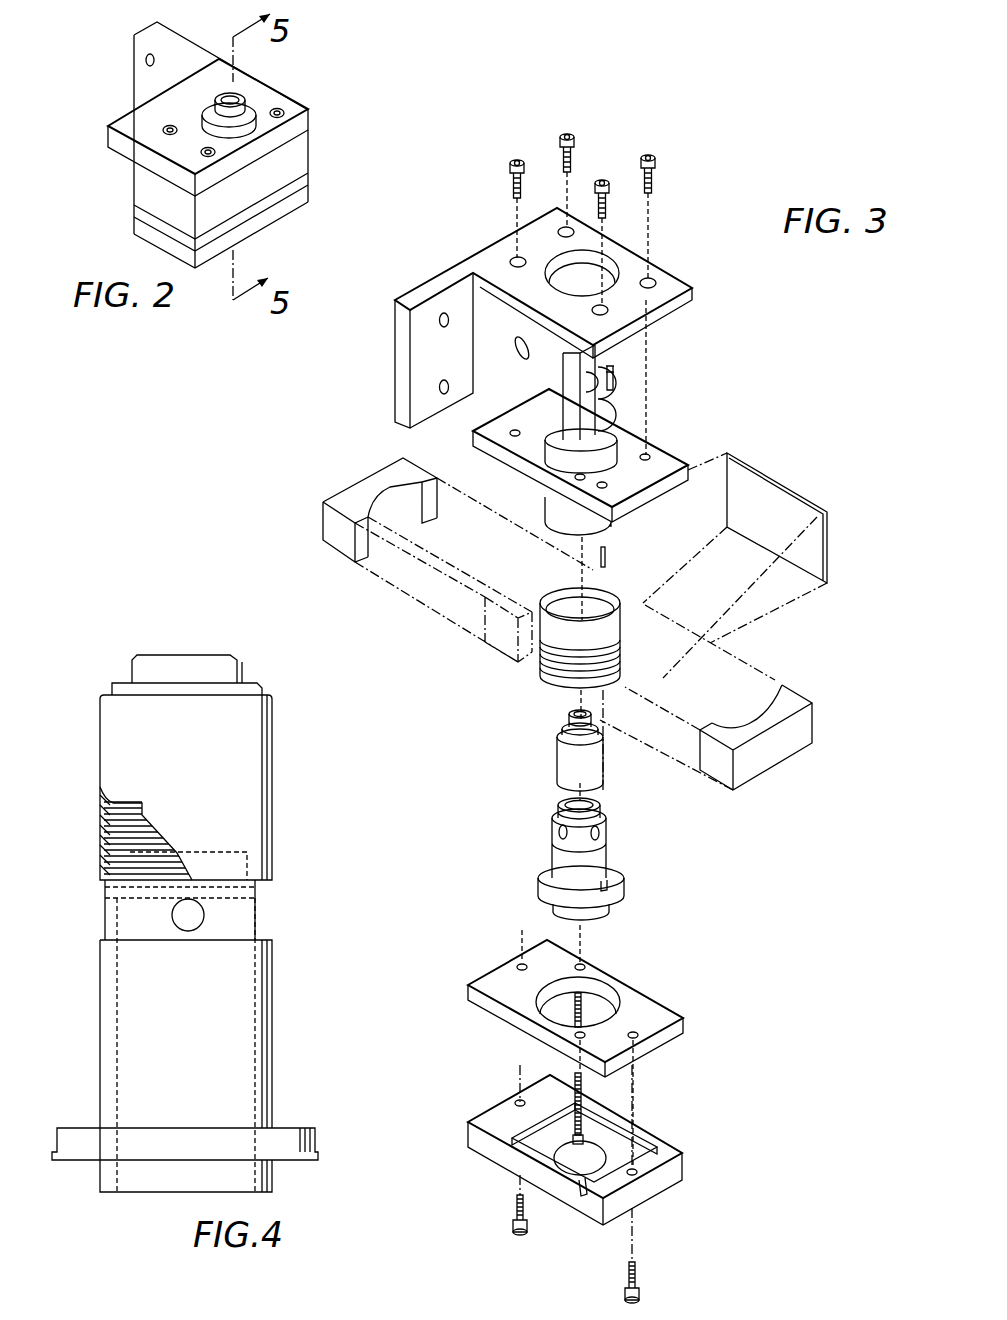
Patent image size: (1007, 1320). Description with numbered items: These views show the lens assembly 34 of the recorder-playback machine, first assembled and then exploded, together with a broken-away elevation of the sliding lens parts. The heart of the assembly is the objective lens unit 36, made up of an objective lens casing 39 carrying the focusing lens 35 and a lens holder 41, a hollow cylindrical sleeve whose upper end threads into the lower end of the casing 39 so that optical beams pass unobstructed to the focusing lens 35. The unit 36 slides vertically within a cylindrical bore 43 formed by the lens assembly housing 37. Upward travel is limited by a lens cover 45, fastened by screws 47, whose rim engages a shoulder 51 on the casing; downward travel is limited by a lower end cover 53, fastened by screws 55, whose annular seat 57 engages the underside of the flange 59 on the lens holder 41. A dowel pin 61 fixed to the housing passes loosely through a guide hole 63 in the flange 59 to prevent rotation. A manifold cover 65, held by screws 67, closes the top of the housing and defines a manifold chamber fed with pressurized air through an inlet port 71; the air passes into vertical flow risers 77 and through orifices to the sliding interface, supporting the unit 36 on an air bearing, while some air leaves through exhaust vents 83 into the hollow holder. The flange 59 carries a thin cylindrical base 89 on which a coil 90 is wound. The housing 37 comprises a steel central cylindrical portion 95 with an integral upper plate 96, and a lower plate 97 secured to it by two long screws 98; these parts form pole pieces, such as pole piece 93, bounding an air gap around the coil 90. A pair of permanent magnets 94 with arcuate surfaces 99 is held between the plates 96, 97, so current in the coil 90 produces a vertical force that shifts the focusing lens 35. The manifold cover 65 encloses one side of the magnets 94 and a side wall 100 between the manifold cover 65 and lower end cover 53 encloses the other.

In FIG. 2, the lens assembly 34 is at (313, 147).
In FIG. 2, the focusing lens 35 is at (230, 93).
In FIG. 3, the focusing lens 35 is at (566, 720).
In FIG. 2, the objective lens unit 36 is at (257, 93).
In FIG. 3, the objective lens unit 36 is at (540, 853).
In FIG. 4, the objective lens unit 36 is at (303, 925).
In FIG. 3, the lens assembly housing 37 is at (663, 432).
In FIG. 2, the objective lens casing 39 is at (229, 127).
In FIG. 3, the objective lens casing 39 is at (592, 770).
In FIG. 4, the objective lens casing 39 is at (240, 757).
In FIG. 3, the lens holder 41 is at (588, 859).
In FIG. 4, the lens holder 41 is at (242, 998).
In FIG. 3, the bore 43 is at (620, 410).
In FIG. 2, the lens cover 45 is at (214, 106).
In FIG. 3, the lens cover 45 is at (614, 372).
In FIG. 3, the screws 47 is at (590, 358).
In FIG. 4, the shoulder 51 is at (250, 682).
In FIG. 2, the lower end cover 53 is at (260, 227).
In FIG. 3, the lower end cover 53 is at (672, 1173).
In FIG. 3, the screws 55 is at (515, 1208).
In FIG. 3, the annular seat 57 is at (612, 1160).
In FIG. 3, the flange 59 is at (612, 876).
In FIG. 4, the flange 59 is at (278, 1143).
In FIG. 3, the dowel pin 61 is at (606, 557).
In FIG. 3, the guide hole 63 is at (607, 890).
In FIG. 2, the manifold cover 65 is at (145, 118).
In FIG. 3, the manifold cover 65 is at (493, 262).
In FIG. 2, the screws 67 is at (171, 135).
In FIG. 3, the screws 67 is at (649, 155).
In FIG. 3, the inlet port 71 is at (518, 358).
In FIG. 3, the flow risers 77 is at (596, 455).
In FIG. 3, the exhaust vents 83 is at (559, 832).
In FIG. 4, the exhaust vents 83 is at (192, 930).
In FIG. 3, the cylindrical base 89 is at (620, 616).
In FIG. 3, the coil 90 is at (620, 650).
In FIG. 3, the pole piece 93 is at (550, 497).
In FIG. 2, the permanent magnets 94 is at (132, 175).
In FIG. 3, the permanent magnets 94 is at (330, 530).
In FIG. 3, the central cylindrical portion 95 is at (545, 468).
In FIG. 3, the upper plate 96 is at (687, 452).
In FIG. 3, the lower plate 97 is at (680, 1030).
In FIG. 3, the screws 98 is at (583, 1005).
In FIG. 3, the arcuate surfaces 99 is at (398, 520).
In FIG. 2, the side wall 100 is at (265, 197).
In FIG. 3, the side wall 100 is at (778, 490).